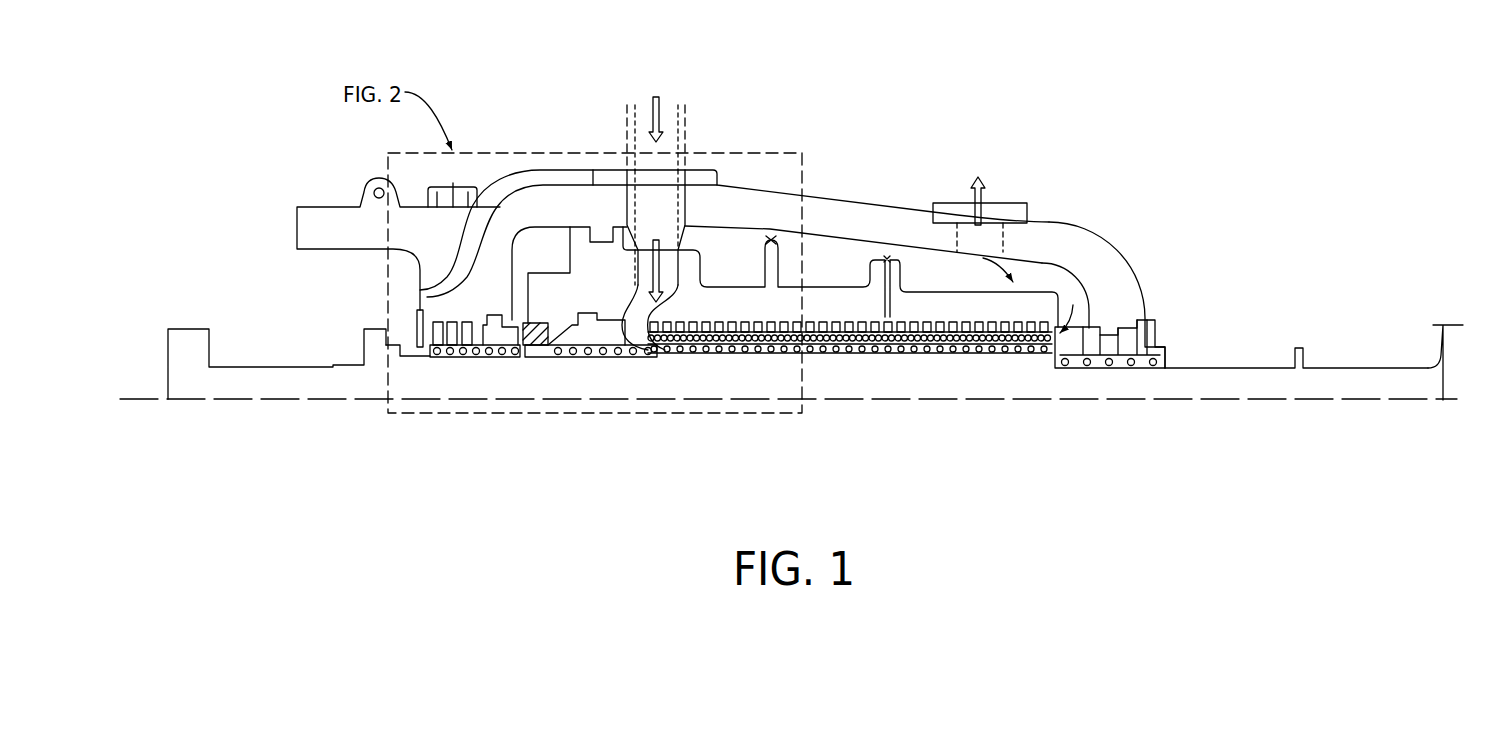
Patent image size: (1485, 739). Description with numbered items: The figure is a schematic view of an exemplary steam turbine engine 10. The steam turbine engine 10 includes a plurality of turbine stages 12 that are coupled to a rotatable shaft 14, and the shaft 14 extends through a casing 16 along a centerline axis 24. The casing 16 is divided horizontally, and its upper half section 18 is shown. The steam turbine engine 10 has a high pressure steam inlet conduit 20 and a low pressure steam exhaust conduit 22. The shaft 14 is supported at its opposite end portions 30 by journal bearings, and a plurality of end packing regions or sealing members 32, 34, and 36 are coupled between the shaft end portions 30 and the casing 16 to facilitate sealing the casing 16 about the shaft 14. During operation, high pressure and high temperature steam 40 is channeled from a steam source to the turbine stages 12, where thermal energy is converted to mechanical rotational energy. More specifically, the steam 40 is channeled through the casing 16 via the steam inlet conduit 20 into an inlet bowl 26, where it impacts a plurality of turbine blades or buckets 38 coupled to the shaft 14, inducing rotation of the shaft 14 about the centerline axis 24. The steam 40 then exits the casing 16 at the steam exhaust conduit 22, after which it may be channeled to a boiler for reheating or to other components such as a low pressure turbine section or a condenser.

The steam turbine engine 10 is at (1008, 52).
The turbine stages 12 is at (763, 358).
The rotatable shaft 14 is at (1343, 367).
The casing 16 is at (1118, 238).
The upper half section 18 is at (1140, 280).
The high pressure steam inlet conduit 20 is at (683, 165).
The low pressure steam exhaust conduit 22 is at (997, 200).
The centerline axis 24 is at (1387, 400).
The inlet bowl 26 is at (639, 362).
The end portions 30 is at (237, 367).
The sealing member 32 is at (477, 362).
The sealing member 34 is at (603, 362).
The sealing member 36 is at (1100, 383).
The turbine blades or buckets 38 is at (817, 358).
The steam 40 is at (663, 98).